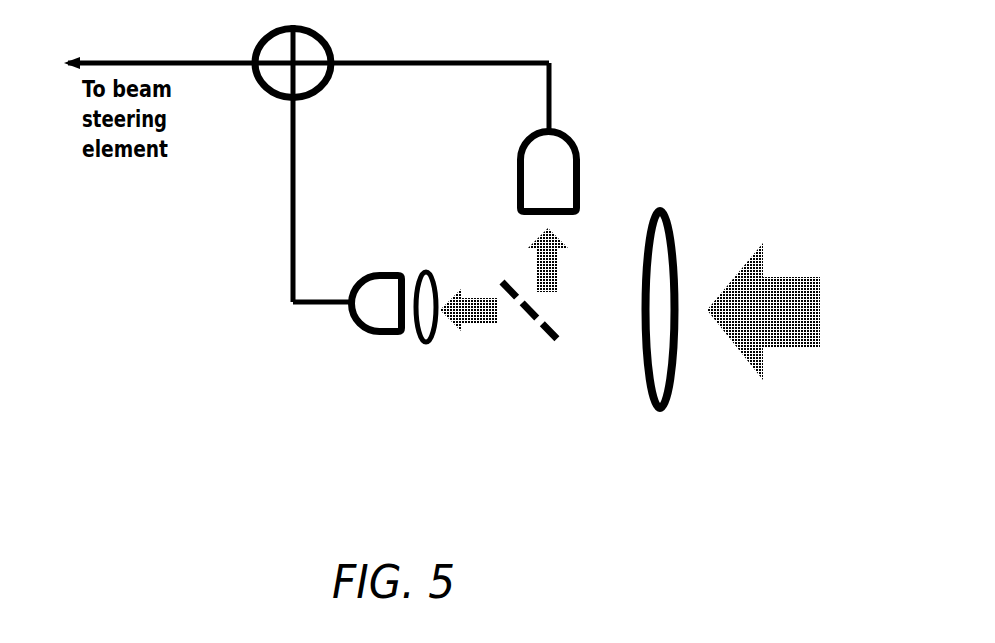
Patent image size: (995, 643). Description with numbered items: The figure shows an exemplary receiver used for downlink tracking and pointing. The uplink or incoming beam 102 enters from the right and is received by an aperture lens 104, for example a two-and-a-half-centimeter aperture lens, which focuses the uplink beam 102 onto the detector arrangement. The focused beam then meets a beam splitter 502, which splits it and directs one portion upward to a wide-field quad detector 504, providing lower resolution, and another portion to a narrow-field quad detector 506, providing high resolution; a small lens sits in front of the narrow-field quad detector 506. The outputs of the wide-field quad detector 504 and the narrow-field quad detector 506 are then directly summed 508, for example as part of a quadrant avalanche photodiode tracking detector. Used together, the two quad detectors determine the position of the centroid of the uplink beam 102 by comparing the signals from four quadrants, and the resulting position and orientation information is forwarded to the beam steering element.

The summing element 508 is at (321, 33).
The wide-field quad detector 504 is at (641, 172).
The narrow-field quad detector 506 is at (348, 352).
The beam splitter 502 is at (545, 357).
The aperture lens 104 is at (705, 475).
The uplink beam 102 is at (802, 350).